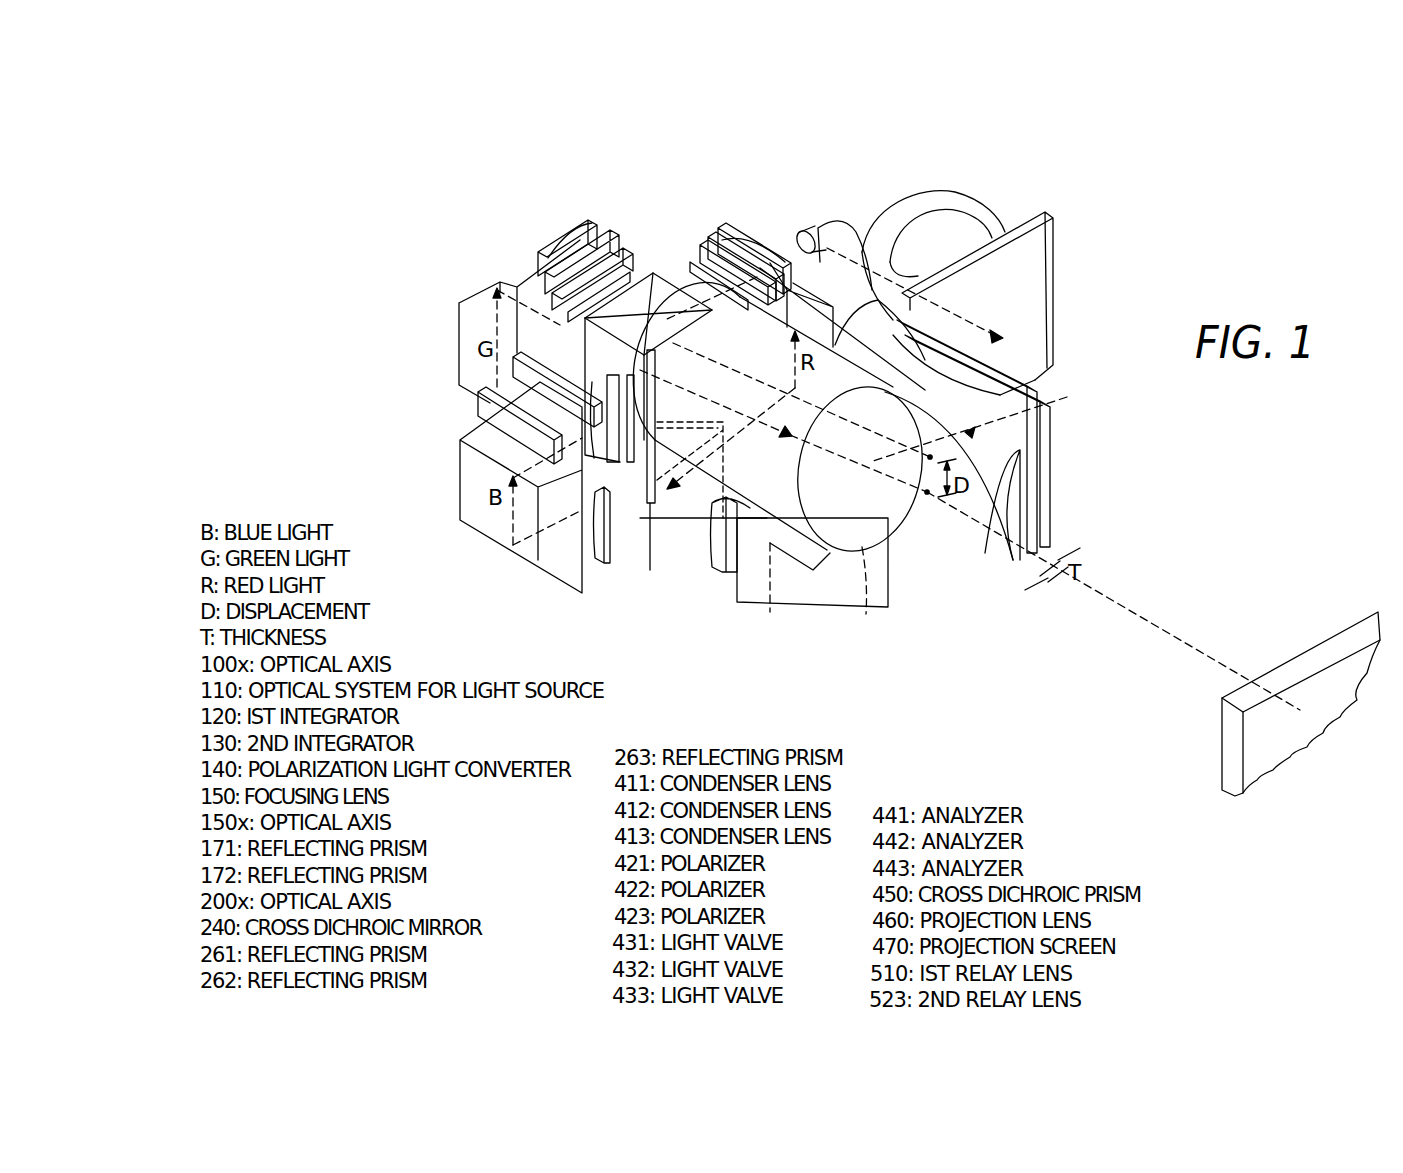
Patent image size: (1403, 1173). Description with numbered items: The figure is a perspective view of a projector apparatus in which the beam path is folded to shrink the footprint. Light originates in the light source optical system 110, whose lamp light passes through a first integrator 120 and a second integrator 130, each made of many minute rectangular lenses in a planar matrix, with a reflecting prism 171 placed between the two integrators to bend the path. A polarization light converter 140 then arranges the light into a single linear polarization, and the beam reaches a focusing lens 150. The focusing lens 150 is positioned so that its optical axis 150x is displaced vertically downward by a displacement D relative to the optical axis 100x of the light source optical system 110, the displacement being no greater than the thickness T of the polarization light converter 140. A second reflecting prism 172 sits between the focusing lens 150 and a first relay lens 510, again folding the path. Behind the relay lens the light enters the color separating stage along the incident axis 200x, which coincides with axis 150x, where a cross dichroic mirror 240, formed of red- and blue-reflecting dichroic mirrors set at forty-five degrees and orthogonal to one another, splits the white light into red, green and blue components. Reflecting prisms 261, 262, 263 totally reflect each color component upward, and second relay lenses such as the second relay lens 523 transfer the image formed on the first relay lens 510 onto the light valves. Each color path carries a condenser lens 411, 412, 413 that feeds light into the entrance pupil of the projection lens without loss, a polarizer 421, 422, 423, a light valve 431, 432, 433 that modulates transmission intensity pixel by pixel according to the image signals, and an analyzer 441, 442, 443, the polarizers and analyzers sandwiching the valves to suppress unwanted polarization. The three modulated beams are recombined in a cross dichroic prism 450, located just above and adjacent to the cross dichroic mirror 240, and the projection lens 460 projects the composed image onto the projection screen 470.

The optical axis 100x is at (1030, 410).
The optical system for light source 110 is at (945, 218).
The first integrator 120 is at (1030, 223).
The second integrator 130 is at (1047, 467).
The polarization light converter 140 is at (1030, 523).
The focusing lens 150 is at (985, 553).
The optical axis 150x is at (885, 620).
The reflecting prism 171 is at (1033, 310).
The reflecting prism 172 is at (822, 592).
The optical axis 200x is at (770, 612).
The cross dichroic mirror 240 is at (675, 510).
The reflecting prism 261 is at (830, 267).
The reflecting prism 262 is at (473, 312).
The reflecting prism 263 is at (475, 498).
The condenser lens 411 is at (777, 273).
The condenser lens 412 is at (537, 307).
The condenser lens 413 is at (480, 423).
The polarizer 421 is at (725, 272).
The polarizer 422 is at (543, 287).
The polarizer 423 is at (570, 358).
The light valve 431 is at (700, 233).
The light valve 432 is at (613, 253).
The light valve 433 is at (633, 550).
The analyzer 441 is at (670, 277).
The analyzer 442 is at (633, 255).
The analyzer 443 is at (632, 458).
The cross dichroic prism 450 is at (648, 300).
The projection lens 460 is at (860, 510).
The projection screen 470 is at (1227, 748).
The first relay lens 510 is at (717, 577).
The second relay lens 523 is at (597, 547).